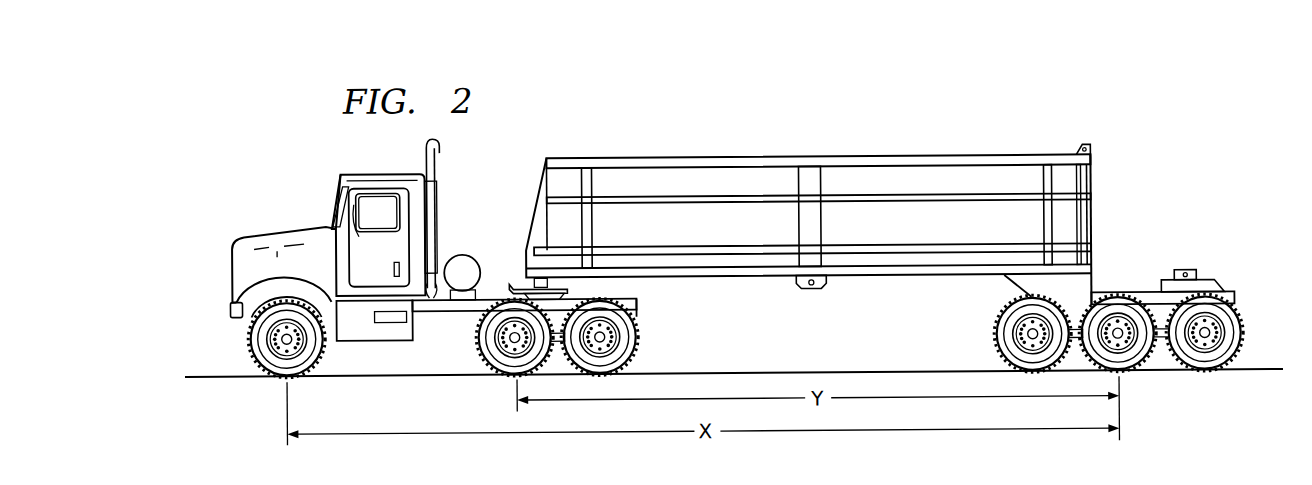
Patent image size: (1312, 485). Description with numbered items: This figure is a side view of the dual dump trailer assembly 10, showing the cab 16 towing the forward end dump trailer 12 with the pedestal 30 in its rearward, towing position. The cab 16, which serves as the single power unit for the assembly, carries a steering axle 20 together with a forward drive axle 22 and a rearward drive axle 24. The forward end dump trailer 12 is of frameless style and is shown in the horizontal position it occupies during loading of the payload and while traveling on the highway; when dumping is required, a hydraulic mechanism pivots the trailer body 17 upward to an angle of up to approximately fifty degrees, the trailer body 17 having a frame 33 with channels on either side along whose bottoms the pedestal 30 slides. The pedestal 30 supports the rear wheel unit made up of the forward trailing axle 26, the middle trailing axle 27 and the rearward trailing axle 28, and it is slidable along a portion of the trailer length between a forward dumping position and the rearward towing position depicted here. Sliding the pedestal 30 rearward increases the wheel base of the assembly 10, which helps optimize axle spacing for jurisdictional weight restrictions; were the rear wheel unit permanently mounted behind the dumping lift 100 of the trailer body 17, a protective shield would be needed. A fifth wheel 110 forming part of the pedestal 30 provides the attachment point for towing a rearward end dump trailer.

The dual dump trailer assembly 10 is at (264, 120).
The forward end dump trailer 12 is at (933, 158).
The cab 16 is at (295, 232).
The trailer body 17 is at (717, 161).
The steering axle 20 is at (266, 333).
The forward drive axle 22 is at (496, 334).
The rearward drive axle 24 is at (620, 334).
The forward trailing axle 26 is at (1012, 334).
The middle trailing axle 27 is at (1128, 358).
The rearward trailing axle 28 is at (1222, 337).
The pedestal 30 is at (1007, 284).
The frame 33 is at (906, 252).
The dumping lift 100 is at (1102, 280).
The fifth wheel 110 is at (1206, 287).